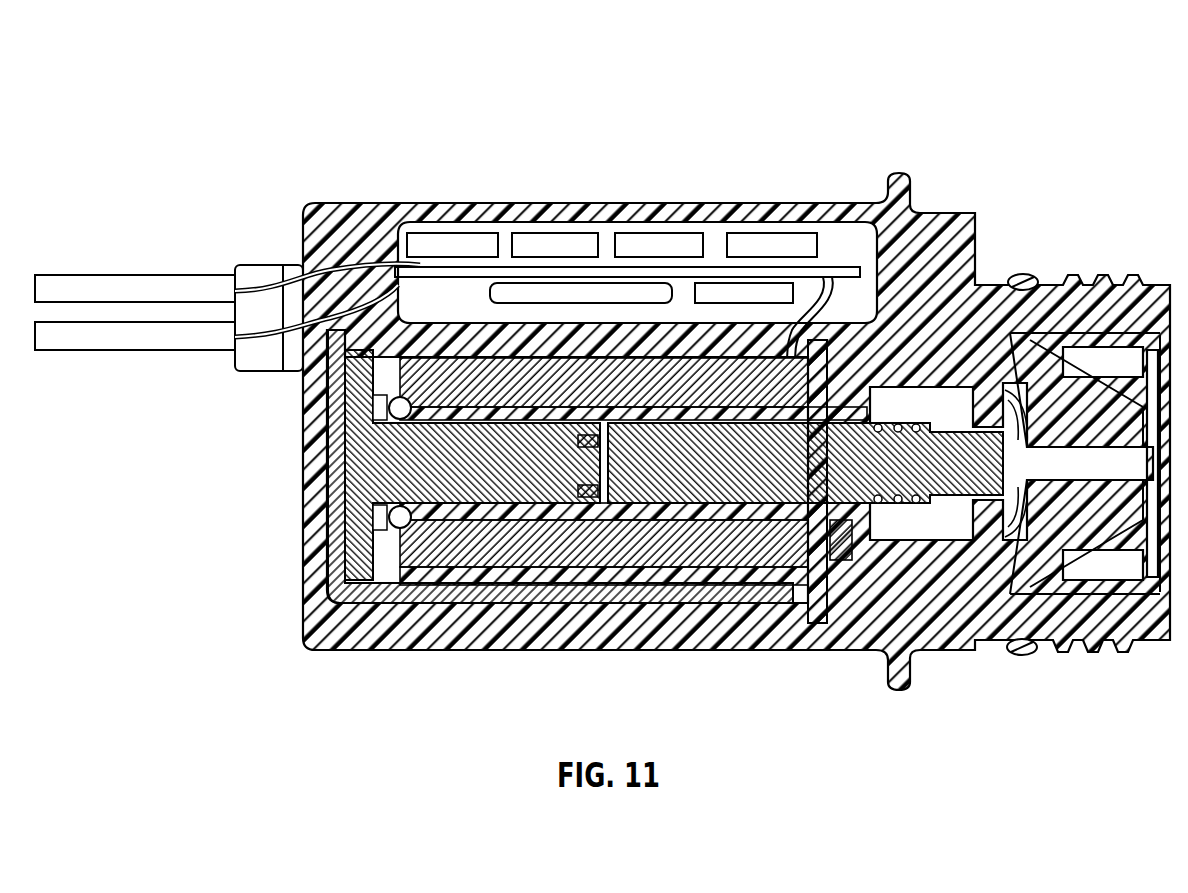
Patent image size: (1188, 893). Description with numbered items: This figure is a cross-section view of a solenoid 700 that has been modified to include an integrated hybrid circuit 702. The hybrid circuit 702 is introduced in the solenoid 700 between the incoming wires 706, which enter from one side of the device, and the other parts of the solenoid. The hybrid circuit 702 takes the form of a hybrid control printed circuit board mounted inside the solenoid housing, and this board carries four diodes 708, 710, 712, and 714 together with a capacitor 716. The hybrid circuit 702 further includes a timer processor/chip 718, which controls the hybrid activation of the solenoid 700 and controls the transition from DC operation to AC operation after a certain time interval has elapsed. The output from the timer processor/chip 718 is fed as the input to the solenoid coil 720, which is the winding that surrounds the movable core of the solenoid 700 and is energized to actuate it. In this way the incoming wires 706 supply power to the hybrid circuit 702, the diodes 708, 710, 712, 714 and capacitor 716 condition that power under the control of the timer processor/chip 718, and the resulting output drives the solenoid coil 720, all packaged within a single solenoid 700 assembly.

The solenoid 700 is at (505, 58).
The hybrid circuit 702 is at (626, 243).
The incoming wires 706 is at (107, 275).
The diode 708 is at (437, 233).
The diode 710 is at (545, 233).
The diode 712 is at (652, 233).
The diode 714 is at (790, 233).
The capacitor 716 is at (722, 282).
The timer processor/chip 718 is at (547, 307).
The solenoid coil 720 is at (620, 378).